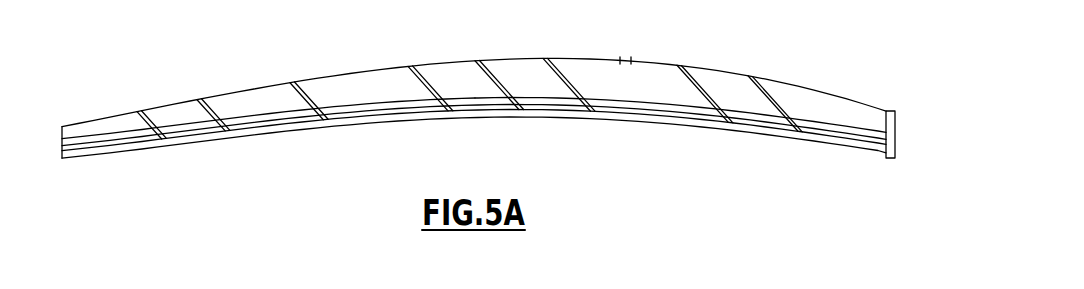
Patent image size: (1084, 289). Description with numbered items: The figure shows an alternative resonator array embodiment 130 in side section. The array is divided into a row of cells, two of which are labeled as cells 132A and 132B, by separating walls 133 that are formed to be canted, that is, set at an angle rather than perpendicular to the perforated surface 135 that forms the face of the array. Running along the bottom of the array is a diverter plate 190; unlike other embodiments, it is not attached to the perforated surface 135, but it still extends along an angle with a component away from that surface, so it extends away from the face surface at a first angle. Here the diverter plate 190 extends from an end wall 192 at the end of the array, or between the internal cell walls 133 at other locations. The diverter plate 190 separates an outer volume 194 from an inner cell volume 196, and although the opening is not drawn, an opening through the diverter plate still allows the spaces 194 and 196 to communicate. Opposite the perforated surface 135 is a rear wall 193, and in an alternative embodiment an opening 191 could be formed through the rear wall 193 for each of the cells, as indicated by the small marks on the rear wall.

The blade assembly 130 is at (533, 153).
The cell 132A is at (115, 124).
The cell 132B is at (792, 97).
The separating walls 133 is at (413, 76).
The perforated surface 135 is at (405, 124).
The diverter plate 190 is at (833, 130).
The opening 191 is at (622, 57).
The end wall 192 is at (896, 125).
The rear wall 193 is at (572, 58).
The outer volume 194 is at (812, 135).
The inner cell volume 196 is at (820, 103).